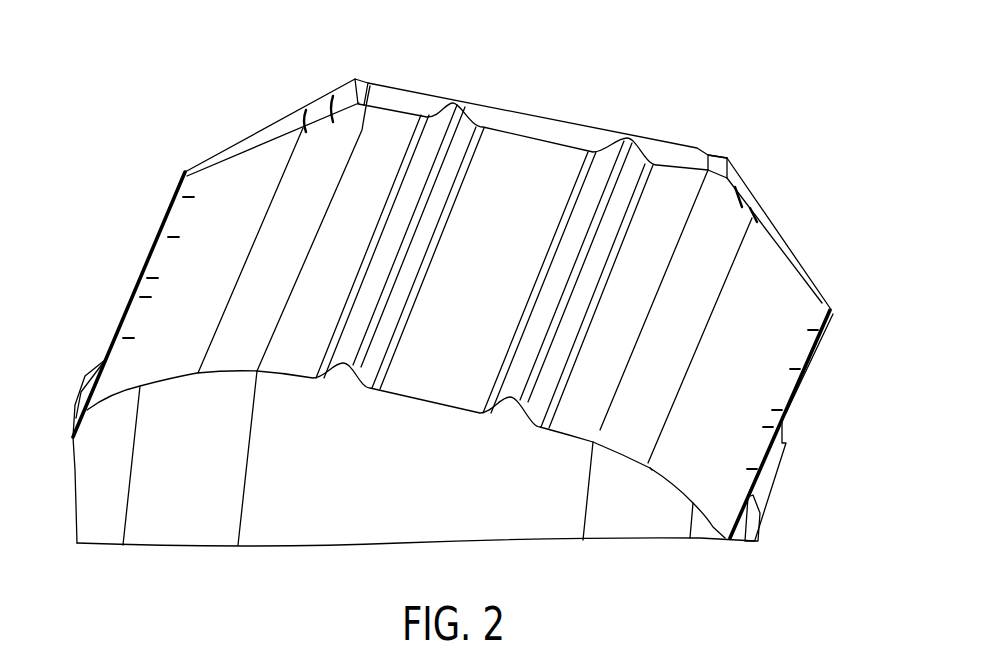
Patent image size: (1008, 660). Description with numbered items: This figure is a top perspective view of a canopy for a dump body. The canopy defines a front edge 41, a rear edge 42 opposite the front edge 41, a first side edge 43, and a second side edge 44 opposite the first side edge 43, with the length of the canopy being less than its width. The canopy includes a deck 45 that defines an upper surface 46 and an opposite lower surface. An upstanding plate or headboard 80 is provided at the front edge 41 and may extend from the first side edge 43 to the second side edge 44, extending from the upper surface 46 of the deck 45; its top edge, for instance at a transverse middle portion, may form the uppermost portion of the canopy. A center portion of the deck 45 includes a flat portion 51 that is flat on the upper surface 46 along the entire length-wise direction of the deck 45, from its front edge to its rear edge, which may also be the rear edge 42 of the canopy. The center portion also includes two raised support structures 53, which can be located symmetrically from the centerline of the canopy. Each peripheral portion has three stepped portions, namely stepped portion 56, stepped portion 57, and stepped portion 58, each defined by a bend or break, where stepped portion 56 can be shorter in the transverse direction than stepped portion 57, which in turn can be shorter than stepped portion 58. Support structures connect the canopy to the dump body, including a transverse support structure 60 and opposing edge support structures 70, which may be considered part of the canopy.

The front edge 41 is at (525, 135).
The rear edge 42 is at (393, 397).
The first side edge 43 is at (807, 373).
The second side edge 44 is at (168, 210).
The deck 45 is at (234, 177).
The upper surface 46 is at (688, 209).
The flat portion 51 is at (550, 170).
The raised support structure 53 is at (457, 110).
The stepped portion 56 is at (572, 425).
The stepped portion 57 is at (633, 435).
The stepped portion 58 is at (683, 463).
The transverse support structure 60 is at (182, 535).
The edge support structure 70 is at (750, 498).
The upstanding headboard 80 is at (380, 82).